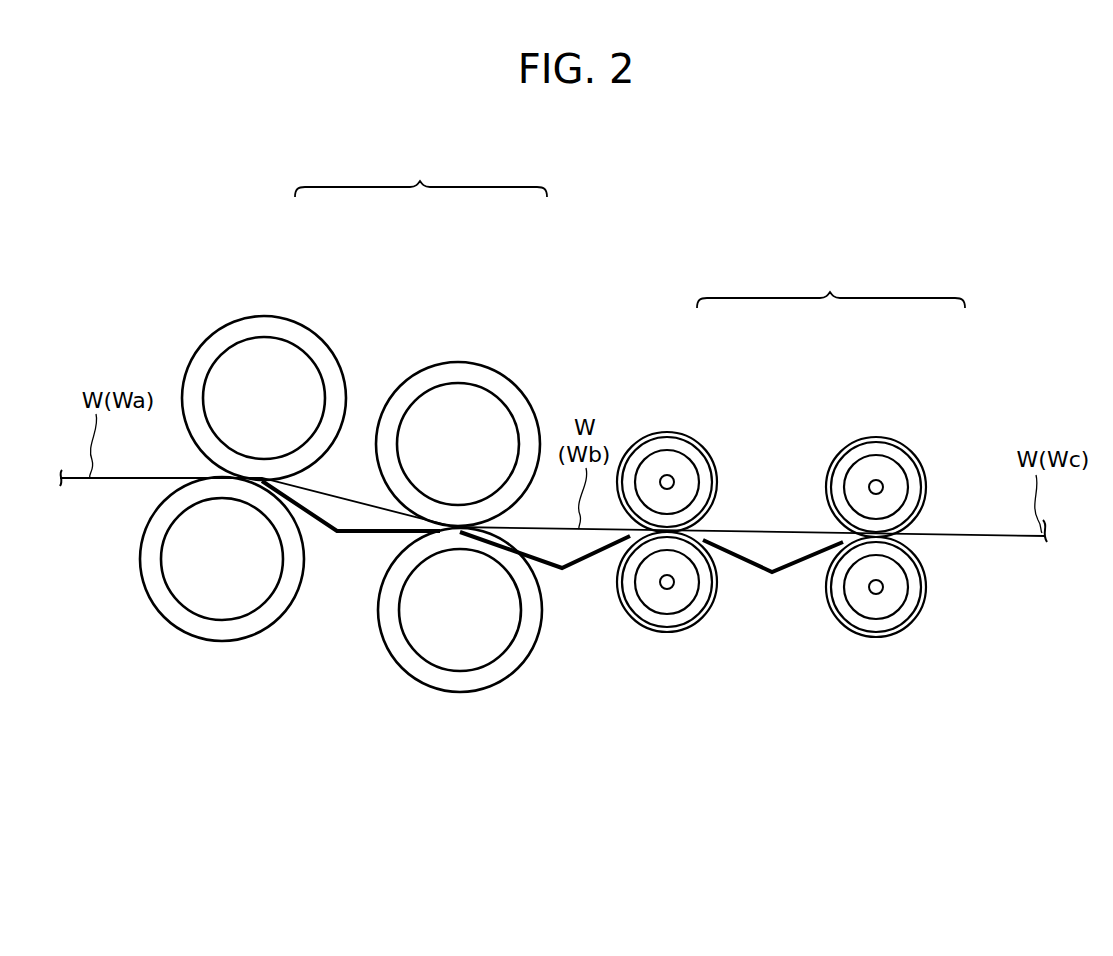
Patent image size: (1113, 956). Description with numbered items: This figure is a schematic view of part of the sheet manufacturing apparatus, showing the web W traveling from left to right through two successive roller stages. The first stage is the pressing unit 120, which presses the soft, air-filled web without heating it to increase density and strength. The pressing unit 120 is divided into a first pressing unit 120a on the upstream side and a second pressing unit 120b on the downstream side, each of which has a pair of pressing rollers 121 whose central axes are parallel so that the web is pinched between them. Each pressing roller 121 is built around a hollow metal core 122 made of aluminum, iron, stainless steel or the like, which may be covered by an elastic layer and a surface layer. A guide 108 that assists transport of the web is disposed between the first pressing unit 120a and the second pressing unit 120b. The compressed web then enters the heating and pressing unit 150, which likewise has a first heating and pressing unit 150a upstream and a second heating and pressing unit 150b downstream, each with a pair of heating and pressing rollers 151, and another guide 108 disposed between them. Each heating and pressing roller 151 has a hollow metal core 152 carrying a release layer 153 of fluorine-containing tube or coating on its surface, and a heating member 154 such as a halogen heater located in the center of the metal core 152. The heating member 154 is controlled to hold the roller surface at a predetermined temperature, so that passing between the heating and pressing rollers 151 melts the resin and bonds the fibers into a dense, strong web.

The guide 108 is at (343, 537).
The pressing unit 120 is at (421, 173).
The first pressing unit 120a is at (281, 283).
The second pressing unit 120b is at (472, 328).
The pressing roller 121 is at (303, 333).
The metal core 122 is at (203, 352).
The heating and pressing unit 150 is at (831, 285).
The first heating and pressing unit 150a is at (681, 393).
The second heating and pressing unit 150b is at (891, 393).
The heating and pressing roller 151 is at (690, 433).
The metal core 152 is at (630, 458).
The release layer 153 is at (710, 456).
The heating member 154 is at (672, 480).